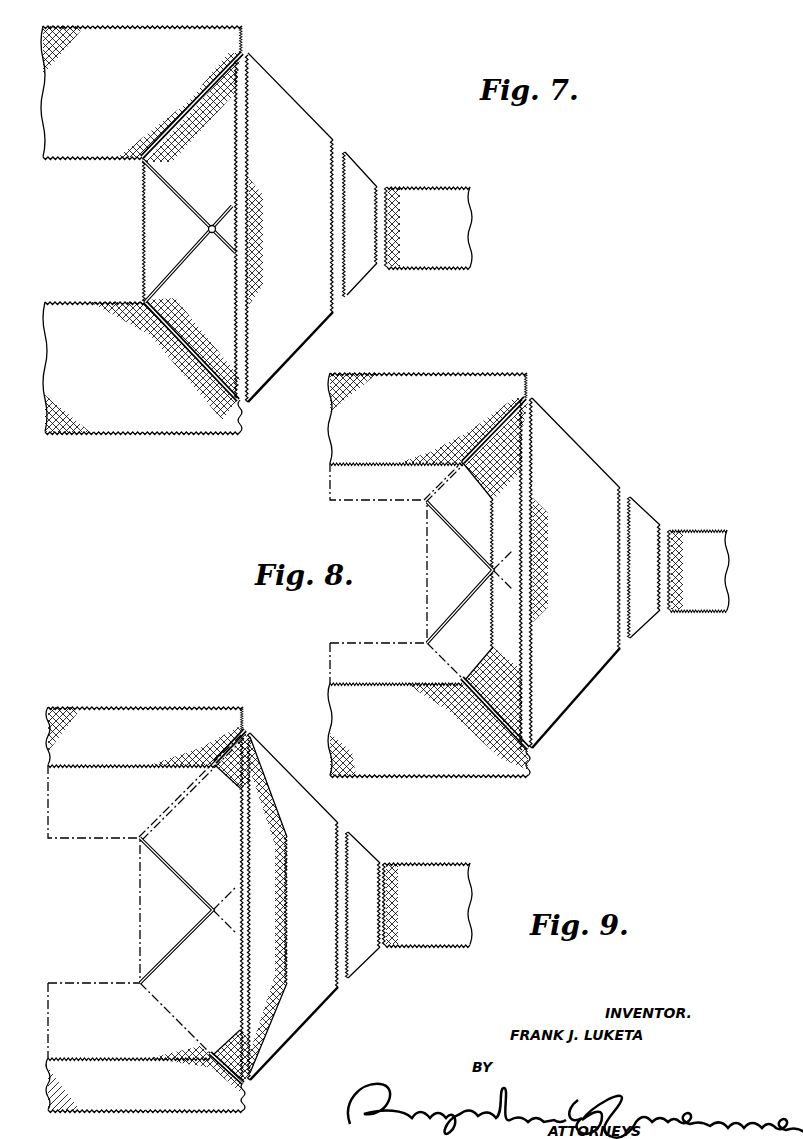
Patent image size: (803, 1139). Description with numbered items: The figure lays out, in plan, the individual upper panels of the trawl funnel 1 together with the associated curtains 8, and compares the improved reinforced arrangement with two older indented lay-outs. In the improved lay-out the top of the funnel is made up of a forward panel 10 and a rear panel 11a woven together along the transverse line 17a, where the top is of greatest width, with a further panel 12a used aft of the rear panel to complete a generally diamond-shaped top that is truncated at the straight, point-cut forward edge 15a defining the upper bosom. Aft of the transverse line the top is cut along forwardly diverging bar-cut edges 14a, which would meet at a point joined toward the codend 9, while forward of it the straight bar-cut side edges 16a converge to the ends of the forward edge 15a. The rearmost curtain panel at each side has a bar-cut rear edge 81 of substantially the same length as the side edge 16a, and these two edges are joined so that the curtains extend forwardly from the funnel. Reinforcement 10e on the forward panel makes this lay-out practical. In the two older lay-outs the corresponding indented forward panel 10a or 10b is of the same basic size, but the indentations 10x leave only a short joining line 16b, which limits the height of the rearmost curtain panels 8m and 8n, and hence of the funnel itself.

In FIG. 7, the funnel 1 is at (320, 114).
In FIG. 7, the curtains 8 is at (92, 100).
In FIG. 8, the rearmost curtain panel 8m is at (407, 421).
In FIG. 9, the rearmost curtain panel 8n is at (120, 741).
In FIG. 7, the rear bar-cut edge 81 is at (227, 94).
In FIG. 7, the codend 9 is at (428, 182).
In FIG. 8, the codend 9 is at (700, 592).
In FIG. 9, the codend 9 is at (428, 923).
In FIG. 7, the forward panel 10 is at (146, 214).
In FIG. 8, the forward panel 10 is at (430, 560).
In FIG. 8, the indented forward panel 10a is at (532, 457).
In FIG. 9, the indented forward panel 10b is at (310, 1004).
In FIG. 7, the reinforcement 10e is at (208, 222).
In FIG. 8, the indentations 10x is at (480, 666).
In FIG. 9, the indentations 10x is at (238, 1030).
In FIG. 7, the rear panel 11a is at (306, 231).
In FIG. 8, the rear panel 11a is at (574, 678).
In FIG. 7, the aft panel 12a is at (368, 182).
In FIG. 8, the aft panel 12a is at (645, 522).
In FIG. 7, the forwardly diverging edges 14a is at (336, 142).
In FIG. 7, the forward edge 15a is at (146, 255).
In FIG. 9, the forward edge 15a is at (140, 886).
In FIG. 7, the side edges 16a is at (243, 55).
In FIG. 8, the short joining line 16b is at (505, 410).
In FIG. 9, the short joining line 16b is at (245, 730).
In FIG. 7, the transverse line 17a is at (246, 364).